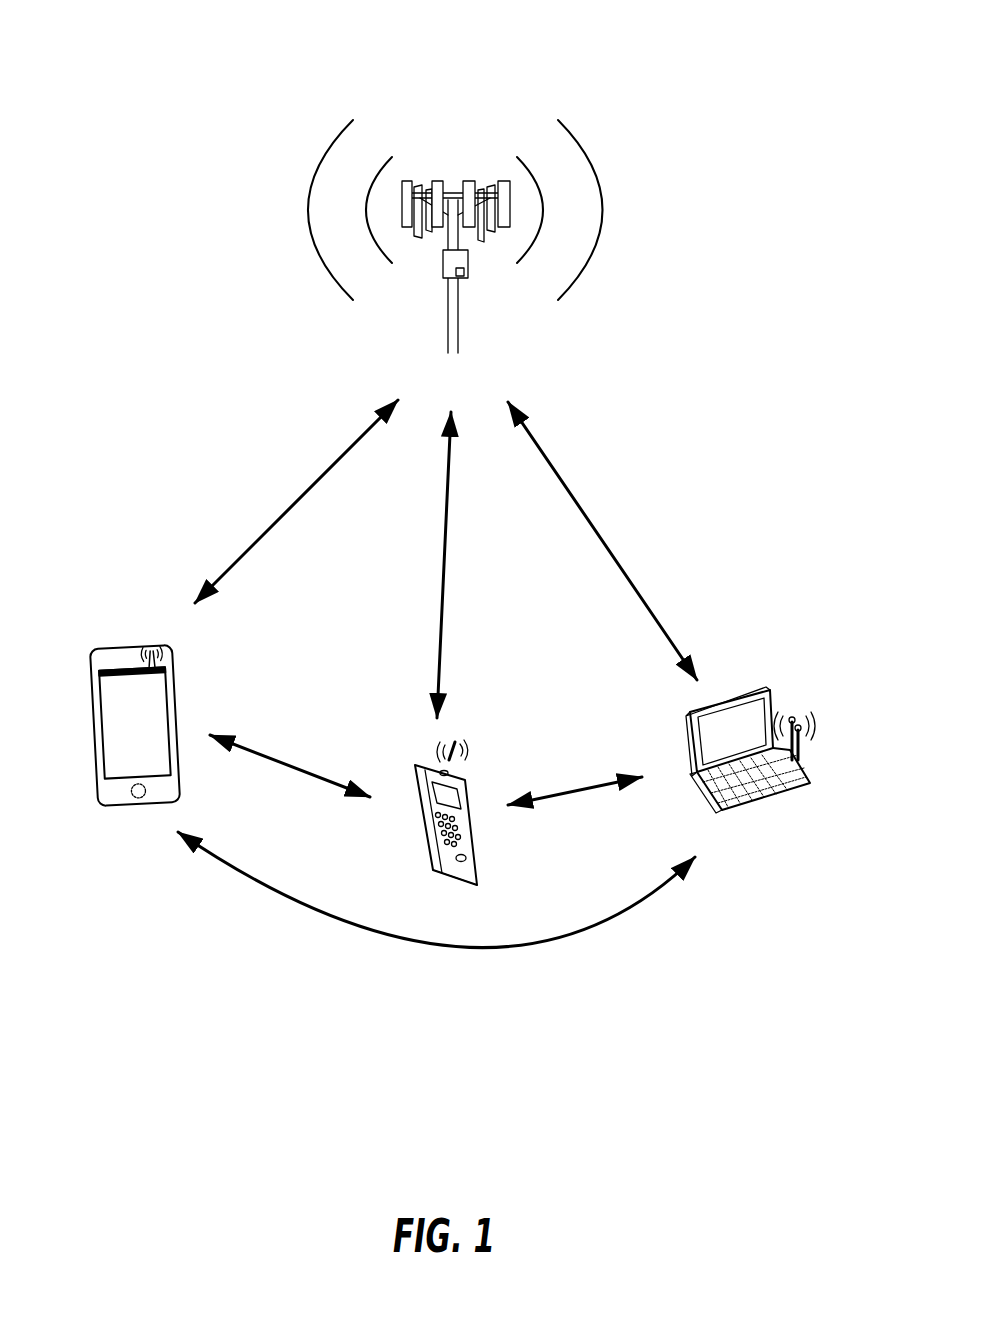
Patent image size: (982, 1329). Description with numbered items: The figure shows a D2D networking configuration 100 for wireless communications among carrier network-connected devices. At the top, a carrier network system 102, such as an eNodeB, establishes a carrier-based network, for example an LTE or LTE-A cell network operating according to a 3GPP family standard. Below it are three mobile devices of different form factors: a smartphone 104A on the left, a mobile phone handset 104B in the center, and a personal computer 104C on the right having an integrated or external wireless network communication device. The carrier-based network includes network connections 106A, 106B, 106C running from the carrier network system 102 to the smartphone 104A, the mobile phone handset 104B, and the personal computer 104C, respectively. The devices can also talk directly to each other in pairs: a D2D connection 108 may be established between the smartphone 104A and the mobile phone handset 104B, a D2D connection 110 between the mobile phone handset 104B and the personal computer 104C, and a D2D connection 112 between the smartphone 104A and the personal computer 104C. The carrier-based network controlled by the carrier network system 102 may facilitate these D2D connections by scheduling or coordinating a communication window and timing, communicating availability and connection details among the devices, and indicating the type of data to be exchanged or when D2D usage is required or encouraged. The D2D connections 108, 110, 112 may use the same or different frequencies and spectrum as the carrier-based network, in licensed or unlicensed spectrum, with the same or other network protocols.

The D2D networking configuration 100 is at (240, 64).
The carrier network system 102 is at (468, 265).
The smartphone 104A is at (181, 790).
The mobile phone handset 104B is at (473, 886).
The personal computer 104C is at (790, 792).
The network connection 106A is at (253, 547).
The network connection 106B is at (444, 598).
The network connection 106C is at (630, 582).
The D2D connection 108 is at (288, 760).
The D2D connection 110 is at (600, 788).
The D2D connection 112 is at (317, 927).